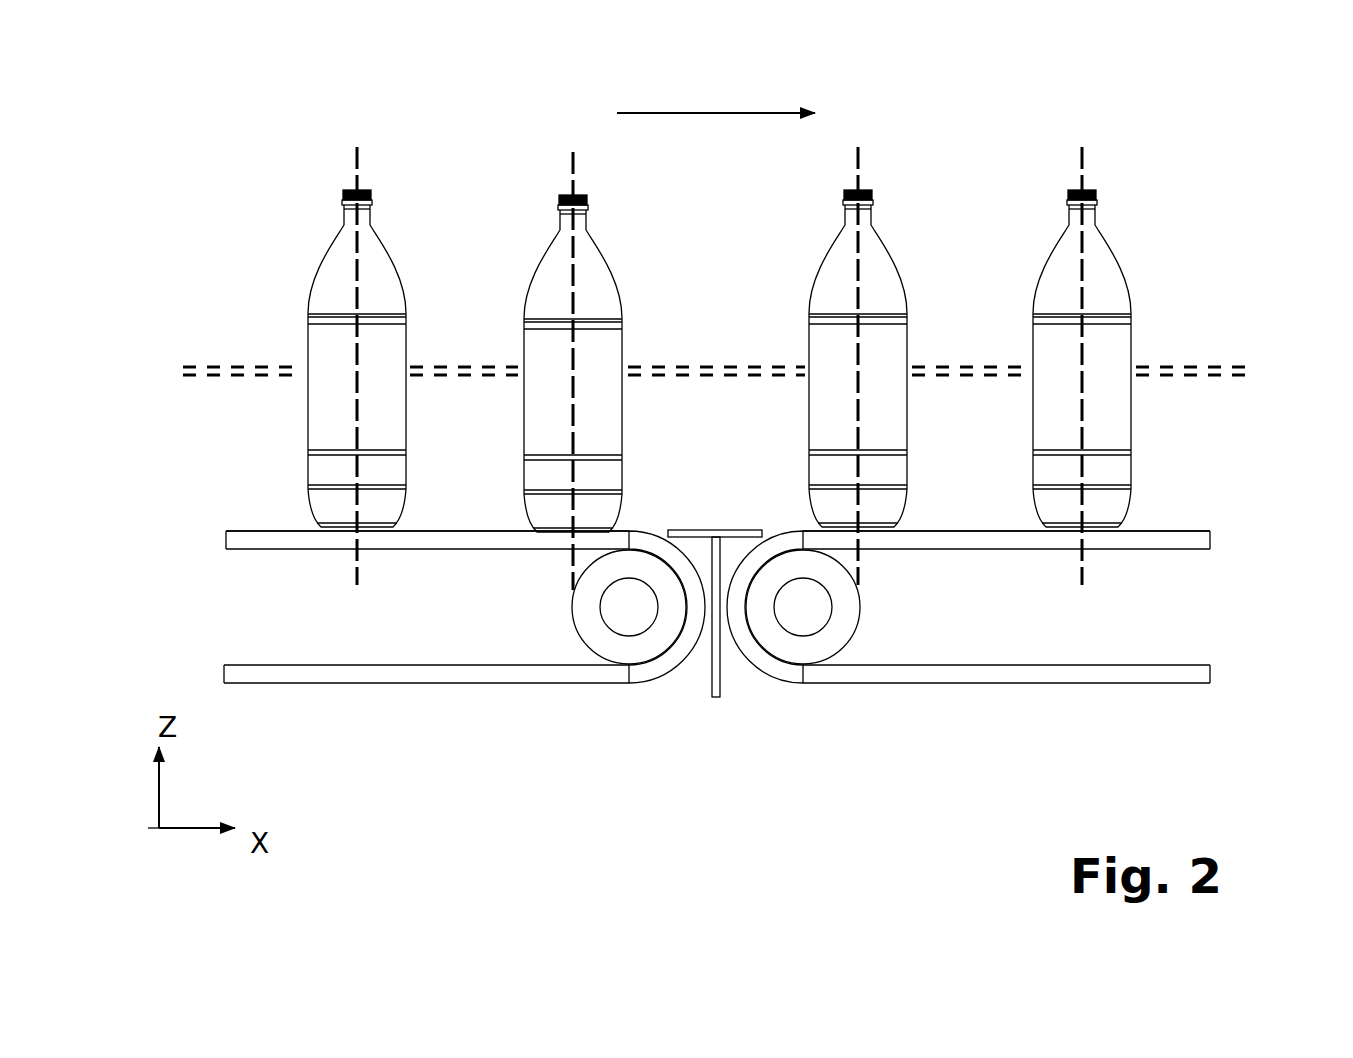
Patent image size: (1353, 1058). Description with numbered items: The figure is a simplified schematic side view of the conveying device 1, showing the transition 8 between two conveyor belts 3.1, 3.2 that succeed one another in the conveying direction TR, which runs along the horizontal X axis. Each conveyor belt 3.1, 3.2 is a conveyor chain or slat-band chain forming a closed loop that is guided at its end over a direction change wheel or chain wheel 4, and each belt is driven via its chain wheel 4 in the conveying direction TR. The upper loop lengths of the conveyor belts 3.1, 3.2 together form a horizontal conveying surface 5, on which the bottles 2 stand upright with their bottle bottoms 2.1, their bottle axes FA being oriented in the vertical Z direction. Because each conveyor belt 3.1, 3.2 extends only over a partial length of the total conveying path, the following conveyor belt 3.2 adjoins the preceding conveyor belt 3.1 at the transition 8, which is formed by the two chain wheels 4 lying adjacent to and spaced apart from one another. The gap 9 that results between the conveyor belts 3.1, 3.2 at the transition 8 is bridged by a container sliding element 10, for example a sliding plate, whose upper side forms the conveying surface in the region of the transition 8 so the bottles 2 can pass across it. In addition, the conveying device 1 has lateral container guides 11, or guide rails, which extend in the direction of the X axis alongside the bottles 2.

The conveying device 1 is at (1220, 170).
The bottles 2 is at (308, 290).
The bottle bottom 2.1 is at (327, 525).
The conveyor belt 3.1 is at (470, 702).
The conveyor belt 3.2 is at (1113, 703).
The chain wheel 4 is at (620, 642).
The conveying surface 5 is at (460, 528).
The transition 8 is at (724, 498).
The gap 9 is at (727, 657).
The container sliding element 10 is at (732, 530).
The lateral container guides 11 is at (1188, 368).
The bottle axis FA is at (355, 170).
The conveying direction TR is at (716, 95).